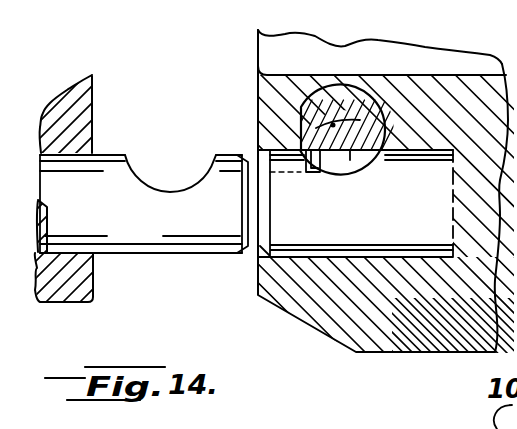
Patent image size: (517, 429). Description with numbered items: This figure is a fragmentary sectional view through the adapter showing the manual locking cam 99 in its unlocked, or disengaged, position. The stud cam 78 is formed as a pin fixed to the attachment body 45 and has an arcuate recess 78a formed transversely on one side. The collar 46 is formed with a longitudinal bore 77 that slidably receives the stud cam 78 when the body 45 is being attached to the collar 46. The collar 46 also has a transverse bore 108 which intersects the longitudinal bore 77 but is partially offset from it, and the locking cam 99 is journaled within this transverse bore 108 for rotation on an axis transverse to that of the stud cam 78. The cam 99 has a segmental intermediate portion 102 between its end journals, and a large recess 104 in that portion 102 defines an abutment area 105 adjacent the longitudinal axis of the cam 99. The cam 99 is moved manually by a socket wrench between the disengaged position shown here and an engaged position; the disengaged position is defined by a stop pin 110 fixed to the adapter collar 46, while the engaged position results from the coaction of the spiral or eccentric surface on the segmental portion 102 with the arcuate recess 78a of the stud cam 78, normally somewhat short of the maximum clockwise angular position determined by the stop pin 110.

The attachment body 45 is at (80, 309).
The collar 46 is at (322, 336).
The bore 77 is at (416, 253).
The stud cam 78 is at (139, 254).
The arcuate recess 78a is at (137, 174).
The manual locking cam 99 is at (371, 87).
The segmental intermediate portion 102 is at (372, 108).
The large recess 104 is at (370, 155).
The abutment area 105 is at (350, 150).
The transverse bore 108 is at (301, 113).
The stop pin 110 is at (324, 162).